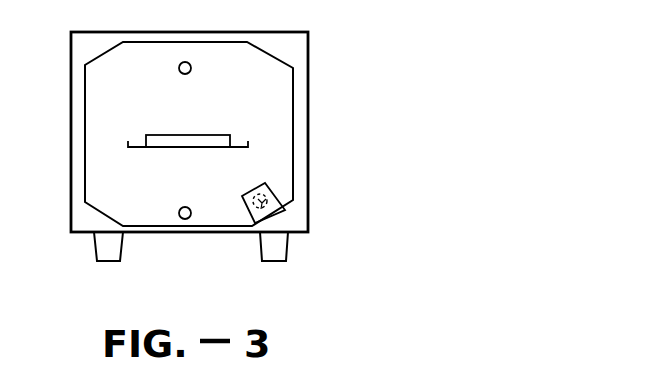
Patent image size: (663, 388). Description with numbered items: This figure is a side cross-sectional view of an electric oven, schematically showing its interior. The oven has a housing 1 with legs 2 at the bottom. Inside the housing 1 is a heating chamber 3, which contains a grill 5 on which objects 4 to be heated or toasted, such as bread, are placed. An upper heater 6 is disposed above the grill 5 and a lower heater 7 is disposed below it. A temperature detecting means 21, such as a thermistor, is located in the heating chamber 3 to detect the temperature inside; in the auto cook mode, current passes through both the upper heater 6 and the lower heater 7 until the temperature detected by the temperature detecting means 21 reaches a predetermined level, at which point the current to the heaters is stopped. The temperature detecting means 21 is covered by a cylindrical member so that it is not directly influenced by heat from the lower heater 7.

The housing 1 is at (262, 32).
The legs 2 is at (102, 243).
The heating chamber 3 is at (134, 55).
The objects to be heated 4 is at (191, 134).
The grill 5 is at (128, 148).
The upper heater 6 is at (187, 62).
The lower heater 7 is at (185, 219).
The temperature detecting means 21 is at (268, 185).